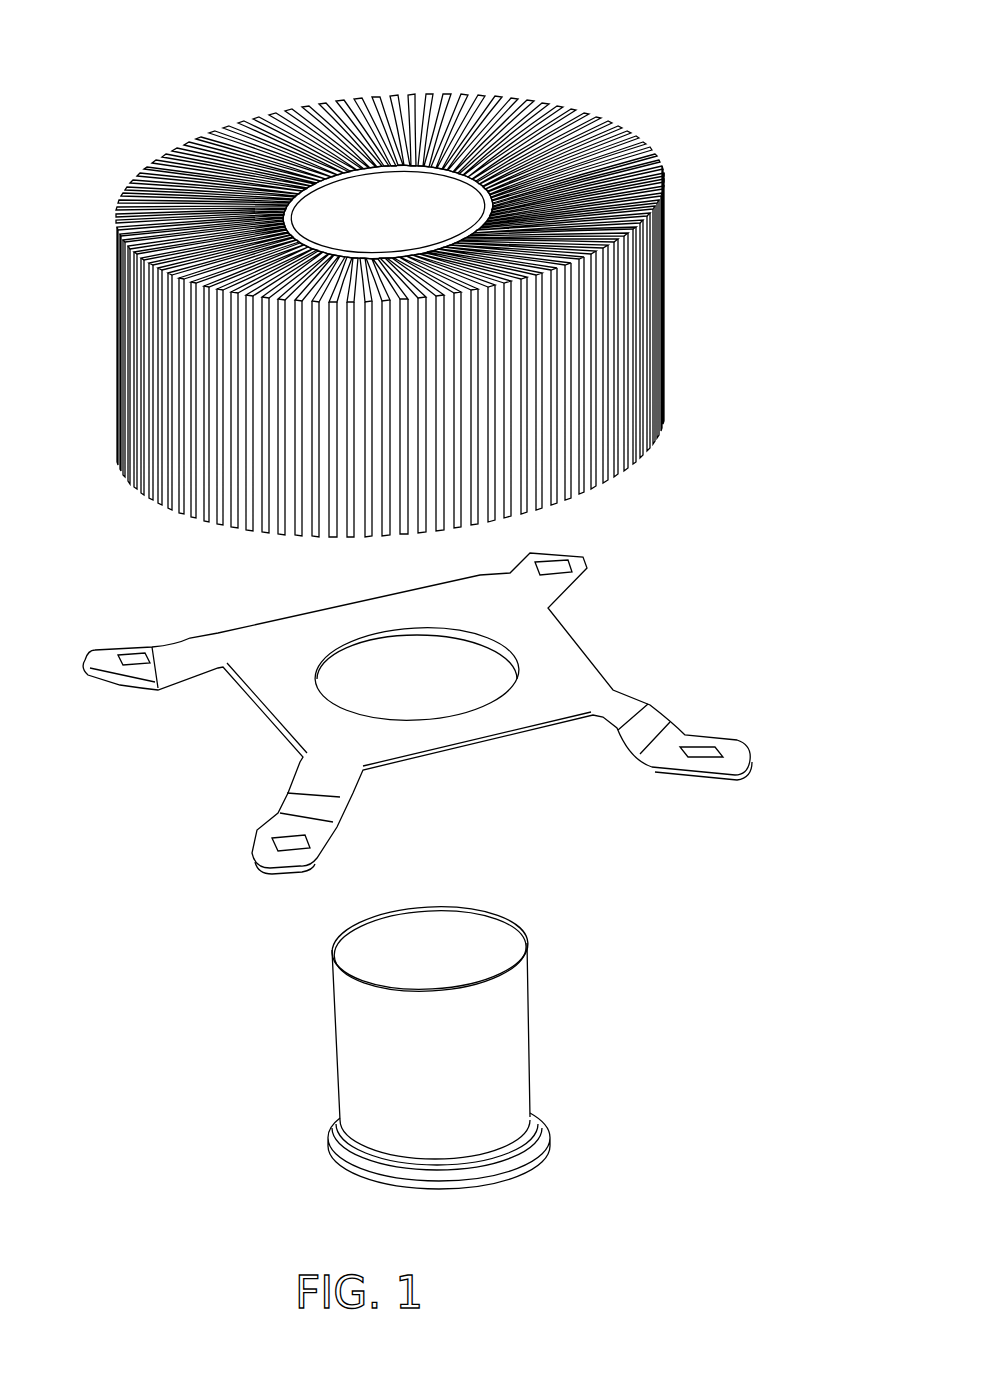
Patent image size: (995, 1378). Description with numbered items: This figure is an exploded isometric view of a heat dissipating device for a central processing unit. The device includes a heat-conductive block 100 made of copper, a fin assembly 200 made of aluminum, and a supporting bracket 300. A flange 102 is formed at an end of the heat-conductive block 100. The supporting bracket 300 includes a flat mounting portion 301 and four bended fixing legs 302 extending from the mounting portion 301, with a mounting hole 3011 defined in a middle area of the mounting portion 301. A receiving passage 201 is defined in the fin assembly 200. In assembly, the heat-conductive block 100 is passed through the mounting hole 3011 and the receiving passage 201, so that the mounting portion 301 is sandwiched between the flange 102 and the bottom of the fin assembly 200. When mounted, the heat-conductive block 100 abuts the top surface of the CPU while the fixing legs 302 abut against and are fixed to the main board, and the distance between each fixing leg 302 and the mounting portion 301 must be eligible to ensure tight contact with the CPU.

The heat-conductive block 100 is at (528, 1045).
The flange 102 is at (540, 1118).
The fin assembly 200 is at (390, 269).
The receiving passage 201 is at (350, 205).
The supporting bracket 300 is at (463, 712).
The mounting portion 301 is at (503, 710).
The mounting hole 3011 is at (367, 673).
The fixing legs 302 is at (740, 748).